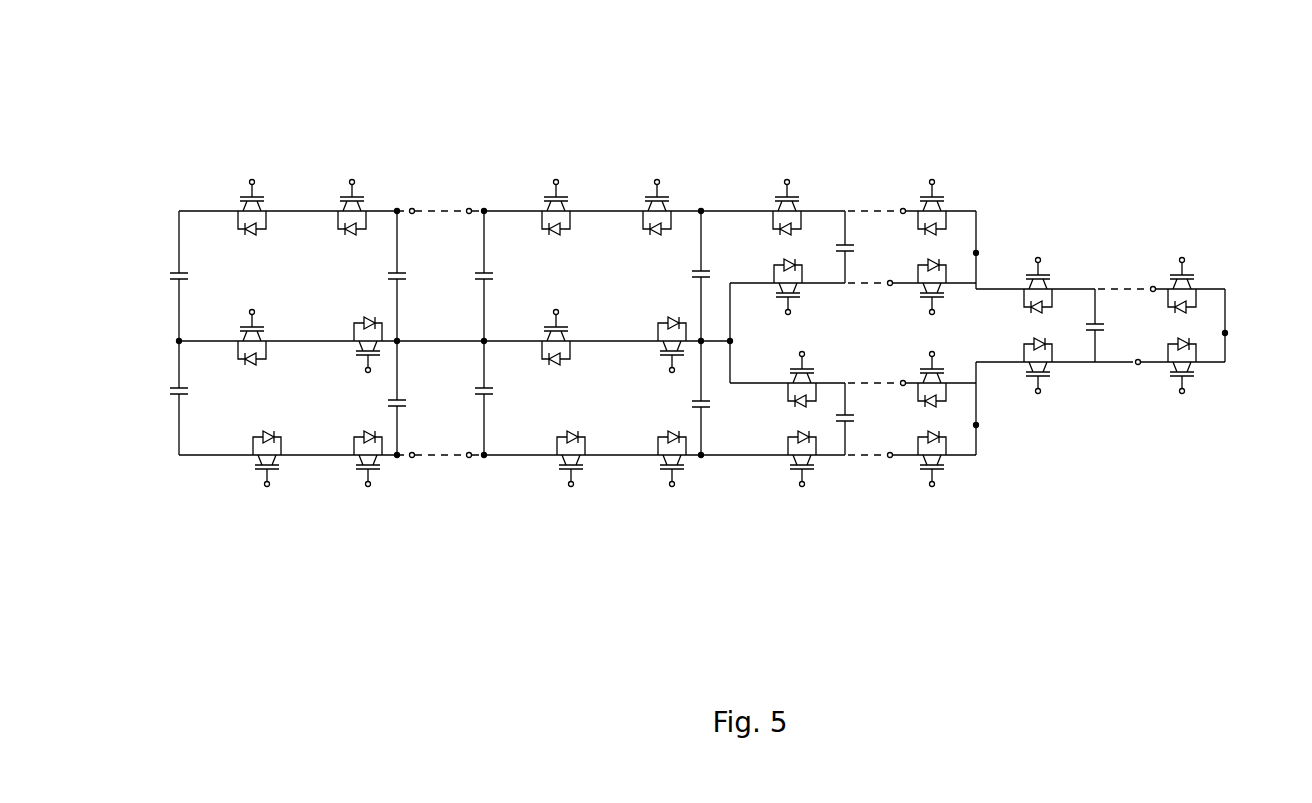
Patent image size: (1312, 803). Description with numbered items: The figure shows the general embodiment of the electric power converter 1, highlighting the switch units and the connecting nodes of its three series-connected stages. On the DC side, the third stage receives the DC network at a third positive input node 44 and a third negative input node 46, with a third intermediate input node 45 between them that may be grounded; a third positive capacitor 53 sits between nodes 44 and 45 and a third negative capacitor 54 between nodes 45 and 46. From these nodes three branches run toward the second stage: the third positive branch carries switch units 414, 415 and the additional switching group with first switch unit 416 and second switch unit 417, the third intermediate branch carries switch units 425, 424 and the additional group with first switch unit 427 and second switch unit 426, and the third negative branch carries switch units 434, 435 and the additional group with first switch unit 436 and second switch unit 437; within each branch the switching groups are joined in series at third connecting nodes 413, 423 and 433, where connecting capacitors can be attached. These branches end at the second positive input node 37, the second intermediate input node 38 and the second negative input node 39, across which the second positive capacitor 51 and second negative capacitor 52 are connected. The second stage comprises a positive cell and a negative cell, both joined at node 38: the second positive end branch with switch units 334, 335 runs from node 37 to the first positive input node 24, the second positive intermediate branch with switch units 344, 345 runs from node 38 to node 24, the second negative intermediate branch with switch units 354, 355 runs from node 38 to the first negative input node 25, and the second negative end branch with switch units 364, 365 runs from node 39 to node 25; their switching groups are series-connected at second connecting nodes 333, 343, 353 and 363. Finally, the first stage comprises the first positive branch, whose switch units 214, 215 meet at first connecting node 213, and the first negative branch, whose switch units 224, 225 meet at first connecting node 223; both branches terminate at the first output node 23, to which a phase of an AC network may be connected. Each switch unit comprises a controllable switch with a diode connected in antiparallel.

The electric power converter 1 is at (1103, 103).
The first output node 23 is at (1226, 333).
The first positive input node 24 is at (978, 253).
The first negative input node 25 is at (978, 425).
The second positive input node 37 is at (701, 211).
The second intermediate input node 38 is at (702, 343).
The second negative input node 39 is at (701, 455).
The third positive input node 44 is at (179, 211).
The third intermediate input node 45 is at (179, 341).
The third negative input node 46 is at (179, 455).
The second positive capacitor 51 is at (721, 262).
The second negative capacitor 52 is at (681, 399).
The third positive capacitor 53 is at (155, 270).
The third negative capacitor 54 is at (155, 383).
The first connecting node 213 is at (1097, 289).
The switch unit 214 is at (1068, 264).
The switch unit 215 is at (1205, 264).
The first connecting node 223 is at (1097, 362).
The switch unit 224 is at (1069, 381).
The switch unit 225 is at (1206, 381).
The second connecting node 333 is at (847, 215).
The switch unit 334 is at (767, 181).
The switch unit 335 is at (912, 181).
The second connecting node 343 is at (845, 283).
The switch unit 344 is at (820, 303).
The switch unit 345 is at (962, 302).
The second connecting node 353 is at (848, 385).
The switch unit 354 is at (769, 358).
The switch unit 355 is at (908, 359).
The second connecting node 363 is at (846, 456).
The switch unit 364 is at (779, 485).
The switch unit 365 is at (909, 484).
The third connecting node 413 is at (484, 211).
The switch unit 414 is at (233, 182).
The switch unit 415 is at (372, 182).
The first switch unit 416 is at (538, 182).
The second switch unit 417 is at (645, 181).
The third connecting node 423 is at (484, 341).
The switch unit 424 is at (350, 307).
The switch unit 425 is at (240, 307).
The first switch unit 426 is at (652, 307).
The second switch unit 427 is at (543, 306).
The third connecting node 433 is at (484, 455).
The switch unit 434 is at (241, 483).
The switch unit 435 is at (347, 483).
The first switch unit 436 is at (546, 483).
The second switch unit 437 is at (650, 484).